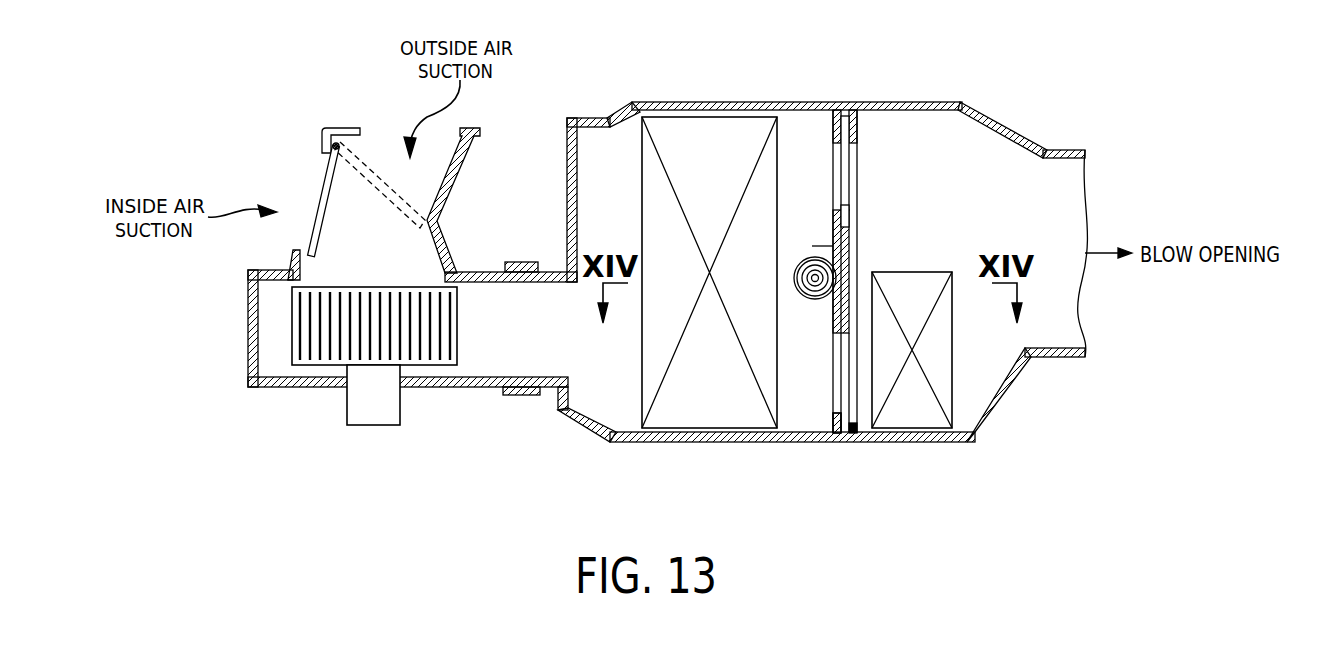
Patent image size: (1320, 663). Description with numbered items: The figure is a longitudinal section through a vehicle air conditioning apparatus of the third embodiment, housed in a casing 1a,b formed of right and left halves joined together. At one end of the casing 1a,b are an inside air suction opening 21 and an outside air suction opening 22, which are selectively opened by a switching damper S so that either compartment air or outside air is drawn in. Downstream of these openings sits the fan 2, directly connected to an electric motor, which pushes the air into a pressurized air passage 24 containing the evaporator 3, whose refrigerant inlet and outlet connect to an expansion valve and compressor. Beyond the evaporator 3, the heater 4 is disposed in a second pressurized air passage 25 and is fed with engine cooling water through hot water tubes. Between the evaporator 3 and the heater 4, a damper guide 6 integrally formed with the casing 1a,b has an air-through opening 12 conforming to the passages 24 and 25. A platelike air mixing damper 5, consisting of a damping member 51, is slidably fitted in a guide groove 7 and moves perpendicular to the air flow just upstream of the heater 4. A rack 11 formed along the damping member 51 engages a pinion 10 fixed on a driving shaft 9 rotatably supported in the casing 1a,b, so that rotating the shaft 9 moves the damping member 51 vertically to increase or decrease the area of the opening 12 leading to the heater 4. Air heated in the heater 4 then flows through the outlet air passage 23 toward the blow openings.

The casing 1a,b is at (613, 108).
The fan 2 is at (302, 367).
The evaporator 3 is at (650, 390).
The heater 4 is at (910, 410).
The air mixing damper 5 is at (880, 150).
The damper guide 6 is at (858, 120).
The guide groove 7 is at (845, 433).
The driving shaft 9 is at (832, 300).
The pinion 10 is at (810, 295).
The rack 11 is at (834, 240).
The air-through opening 12 is at (837, 163).
The inside air suction opening 21 is at (300, 244).
The outside air suction opening 22 is at (368, 157).
The outlet air passage 23 is at (1058, 305).
The pressurized air passage 24 is at (555, 323).
The pressurized air passage 25 is at (817, 245).
The damping member 51 is at (848, 225).
The switching damper S is at (322, 194).